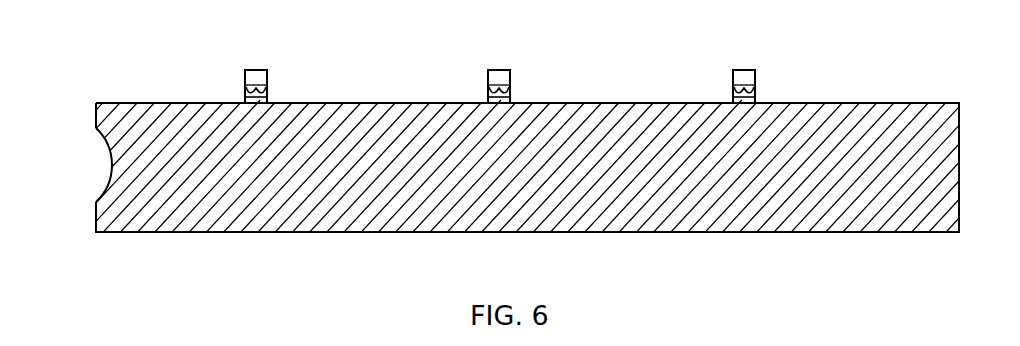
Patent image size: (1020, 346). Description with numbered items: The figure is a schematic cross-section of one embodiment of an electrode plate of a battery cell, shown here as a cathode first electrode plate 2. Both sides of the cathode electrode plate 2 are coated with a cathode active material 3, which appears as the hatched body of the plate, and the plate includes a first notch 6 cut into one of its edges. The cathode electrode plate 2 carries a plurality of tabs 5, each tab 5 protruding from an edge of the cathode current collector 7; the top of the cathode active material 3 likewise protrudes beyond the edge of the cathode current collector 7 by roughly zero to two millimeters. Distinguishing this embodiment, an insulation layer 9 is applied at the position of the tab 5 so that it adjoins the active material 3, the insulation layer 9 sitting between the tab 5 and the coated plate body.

The first electrode plate 2 is at (218, 103).
The cathode active material 3 is at (372, 130).
The tab 5 is at (716, 80).
The first notch 6 is at (100, 157).
The cathode current collector 7 is at (480, 57).
The insulation layer 9 is at (488, 88).